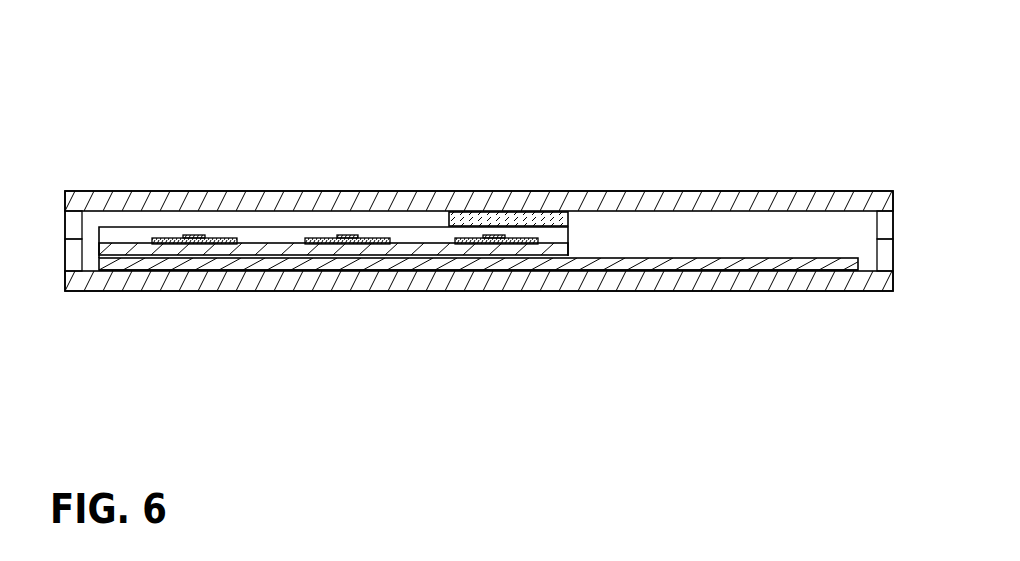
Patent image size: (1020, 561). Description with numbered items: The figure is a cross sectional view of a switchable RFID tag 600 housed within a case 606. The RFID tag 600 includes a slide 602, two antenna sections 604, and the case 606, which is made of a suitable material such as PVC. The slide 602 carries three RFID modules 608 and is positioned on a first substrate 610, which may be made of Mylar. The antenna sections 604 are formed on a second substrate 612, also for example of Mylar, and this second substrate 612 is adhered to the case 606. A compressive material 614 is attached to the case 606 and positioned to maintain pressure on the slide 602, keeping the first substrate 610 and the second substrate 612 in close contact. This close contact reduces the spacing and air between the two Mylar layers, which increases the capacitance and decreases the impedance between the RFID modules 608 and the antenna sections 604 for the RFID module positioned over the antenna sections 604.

The switchable RFID tag 600 is at (768, 162).
The slide 602 is at (192, 226).
The antenna sections 604 is at (396, 272).
The case 606 is at (779, 284).
The RFID modules 608 is at (222, 240).
The first substrate 610 is at (120, 244).
The second substrate 612 is at (240, 266).
The compressive material 614 is at (505, 210).